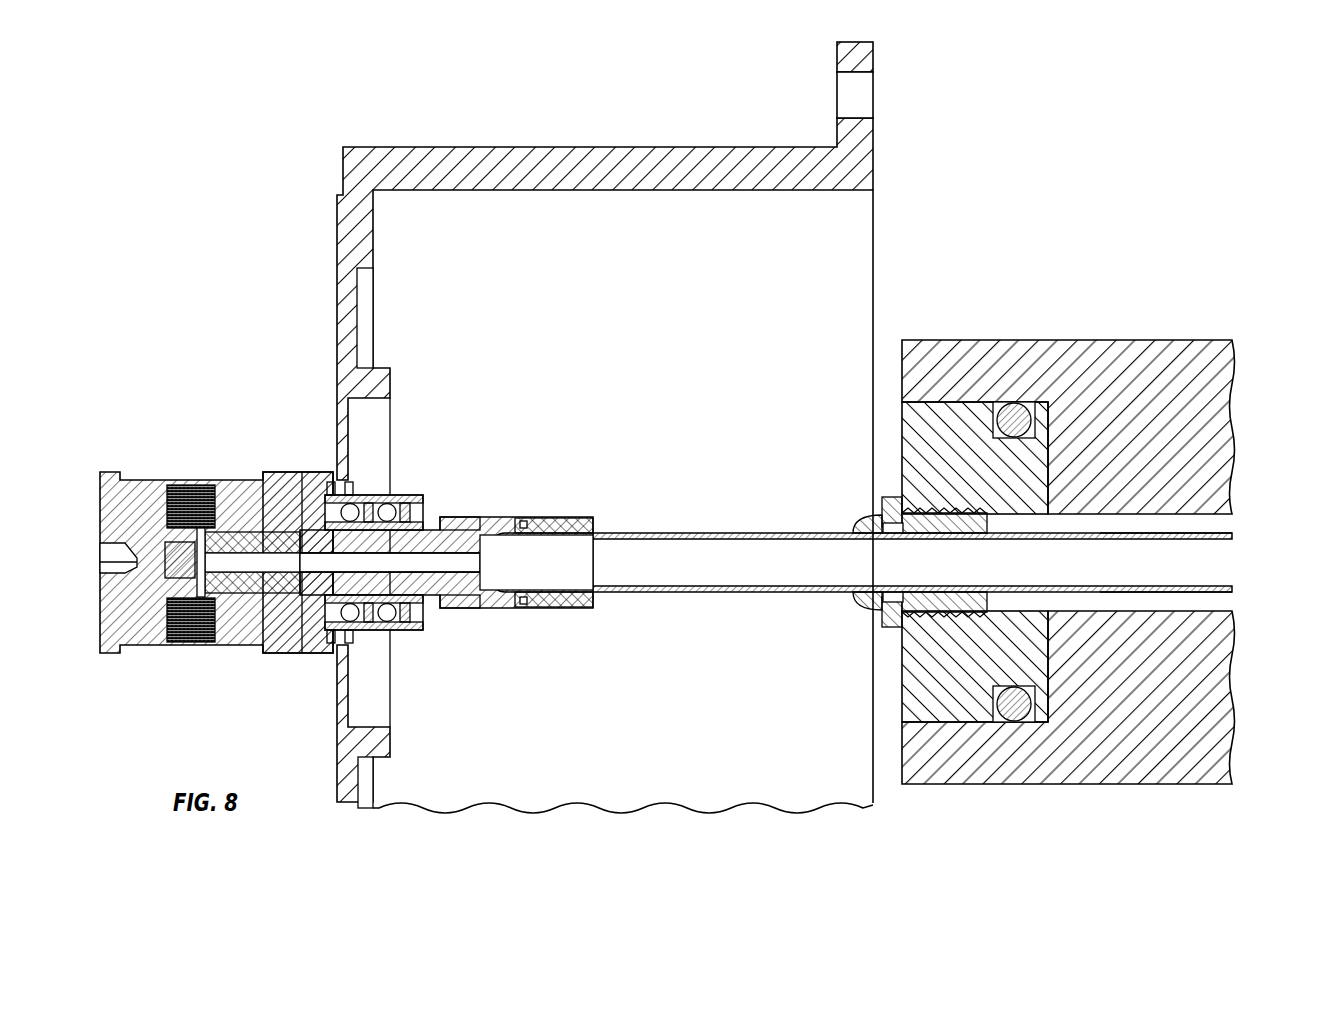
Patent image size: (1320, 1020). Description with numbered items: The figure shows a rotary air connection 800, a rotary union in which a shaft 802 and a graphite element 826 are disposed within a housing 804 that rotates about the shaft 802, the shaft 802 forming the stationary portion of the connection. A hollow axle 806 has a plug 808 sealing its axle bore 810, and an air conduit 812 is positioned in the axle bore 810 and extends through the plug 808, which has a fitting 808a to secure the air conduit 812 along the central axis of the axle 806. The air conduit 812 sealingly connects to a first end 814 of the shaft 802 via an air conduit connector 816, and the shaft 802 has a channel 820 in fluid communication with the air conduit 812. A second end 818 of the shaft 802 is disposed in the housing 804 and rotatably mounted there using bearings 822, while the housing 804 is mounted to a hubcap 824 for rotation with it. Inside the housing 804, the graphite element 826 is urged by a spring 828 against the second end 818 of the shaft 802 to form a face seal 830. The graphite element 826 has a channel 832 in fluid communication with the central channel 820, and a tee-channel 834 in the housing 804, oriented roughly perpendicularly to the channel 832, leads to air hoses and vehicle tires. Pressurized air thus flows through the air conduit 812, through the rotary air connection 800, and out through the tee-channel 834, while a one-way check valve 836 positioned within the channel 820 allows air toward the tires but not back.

The rotary air connection 800 is at (310, 455).
The shaft 802 is at (500, 517).
The housing 804 is at (102, 472).
The hollow axle 806 is at (1132, 340).
The plug 808 is at (902, 422).
The fitting 808a is at (888, 497).
The axle bore 810 is at (1232, 528).
The air conduit 812 is at (740, 533).
The first end of the shaft 814 is at (568, 518).
The air conduit connector 816 is at (567, 607).
The second end of the shaft 818 is at (395, 545).
The channel 820 is at (457, 568).
The bearings 822 is at (352, 504).
The hubcap 824 is at (630, 147).
The graphite element 826 is at (245, 583).
The spring 828 is at (163, 582).
The face seal 830 is at (300, 580).
The channel of the graphite element 832 is at (228, 540).
The tee-channel 834 is at (180, 485).
The one-way check valve 836 is at (322, 572).